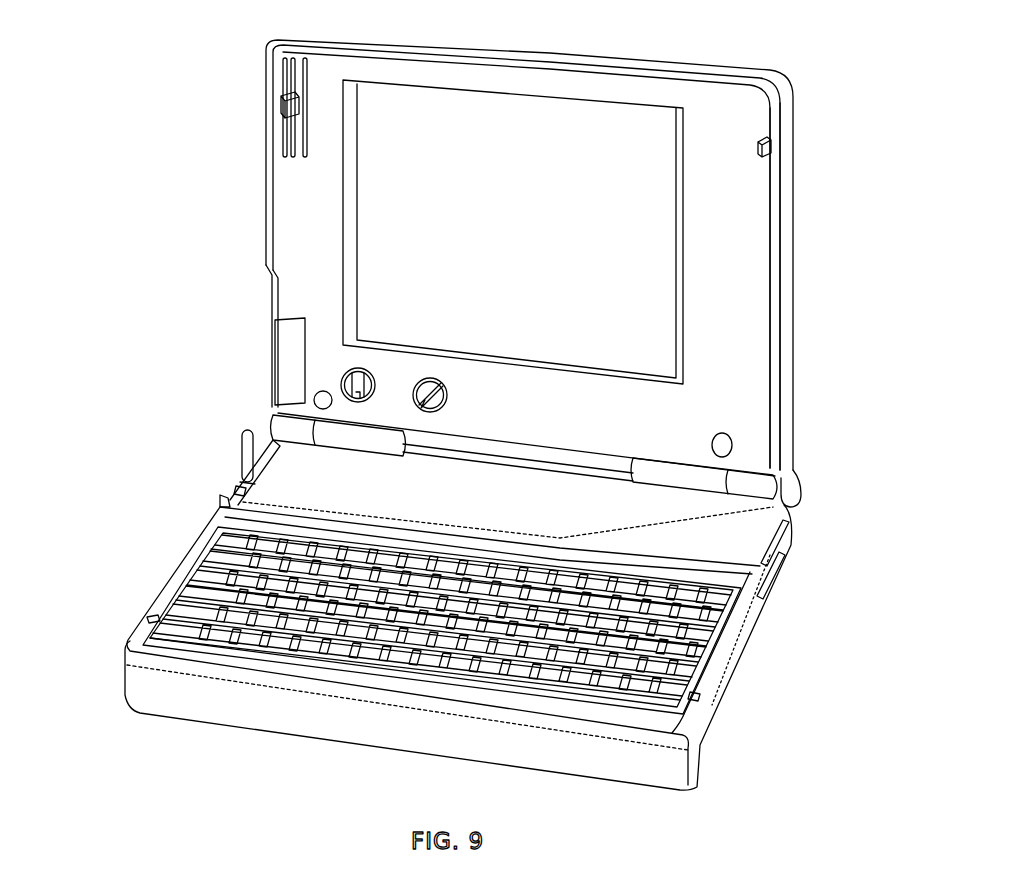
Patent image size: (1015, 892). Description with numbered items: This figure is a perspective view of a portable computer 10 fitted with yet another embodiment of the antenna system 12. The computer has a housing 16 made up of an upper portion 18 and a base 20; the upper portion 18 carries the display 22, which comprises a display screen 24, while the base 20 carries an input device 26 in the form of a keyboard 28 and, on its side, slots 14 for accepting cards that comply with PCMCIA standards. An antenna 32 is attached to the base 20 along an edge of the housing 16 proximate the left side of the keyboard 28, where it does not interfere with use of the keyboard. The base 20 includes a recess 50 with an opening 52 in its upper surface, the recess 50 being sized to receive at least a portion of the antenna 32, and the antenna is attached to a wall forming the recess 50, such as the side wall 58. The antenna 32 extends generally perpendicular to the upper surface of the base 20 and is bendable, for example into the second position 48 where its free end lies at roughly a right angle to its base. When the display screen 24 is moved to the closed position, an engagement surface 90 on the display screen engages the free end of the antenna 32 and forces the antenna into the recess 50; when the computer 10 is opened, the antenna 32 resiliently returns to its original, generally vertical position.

The portable computer 10 is at (926, 290).
The antenna system 12 is at (160, 467).
The slots 14 is at (780, 544).
The housing 16 is at (140, 305).
The upper portion 18 is at (298, 178).
The base 20 is at (218, 642).
The display 22 is at (738, 213).
The display screen 24 is at (570, 150).
The input device 26 is at (772, 700).
The keyboard 28 is at (500, 640).
The antenna 32 is at (240, 443).
The second position 48 is at (188, 448).
The recess 50 is at (240, 490).
The opening 52 is at (220, 497).
The side wall 58 is at (290, 468).
The engagement surface 90 is at (290, 378).